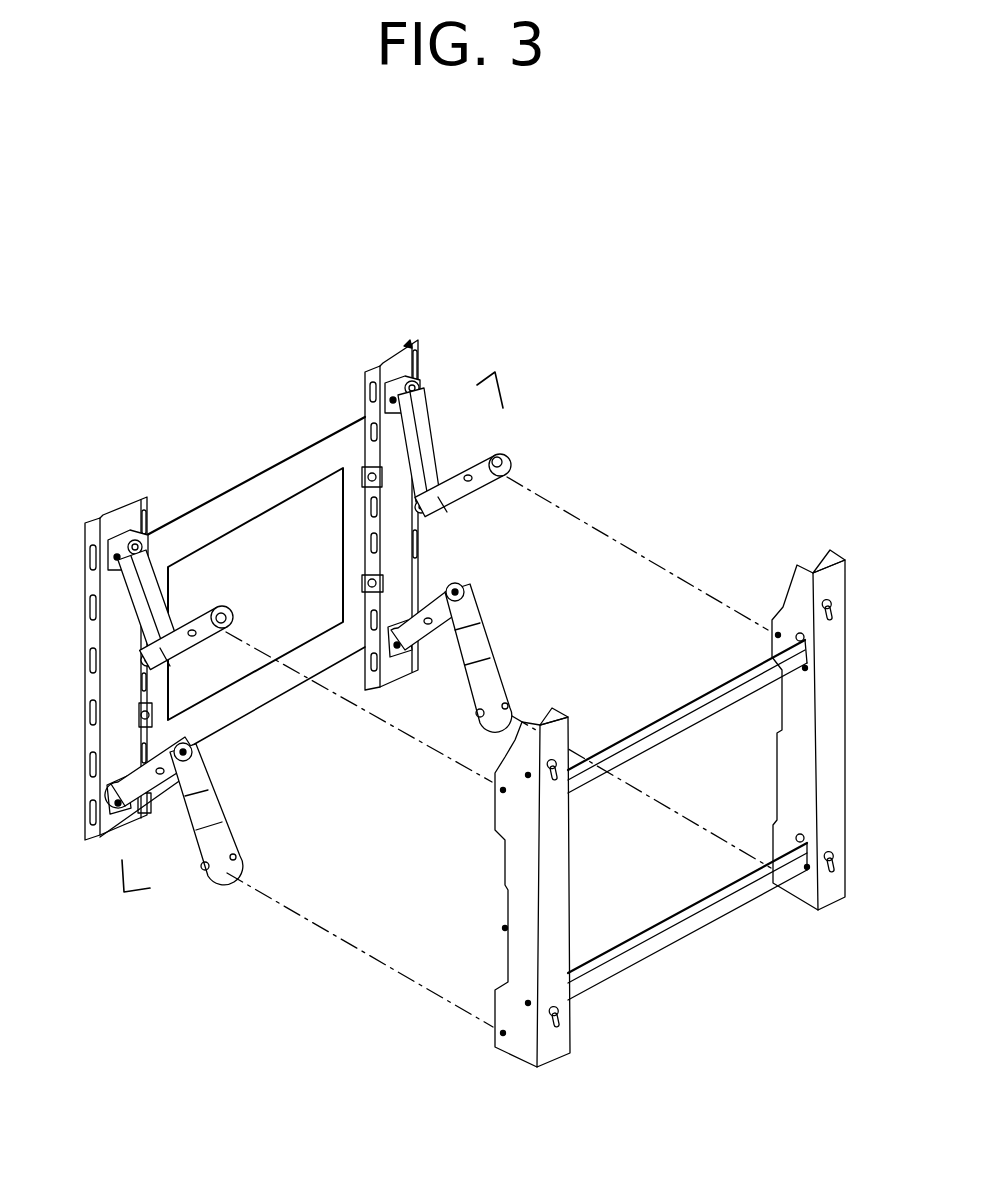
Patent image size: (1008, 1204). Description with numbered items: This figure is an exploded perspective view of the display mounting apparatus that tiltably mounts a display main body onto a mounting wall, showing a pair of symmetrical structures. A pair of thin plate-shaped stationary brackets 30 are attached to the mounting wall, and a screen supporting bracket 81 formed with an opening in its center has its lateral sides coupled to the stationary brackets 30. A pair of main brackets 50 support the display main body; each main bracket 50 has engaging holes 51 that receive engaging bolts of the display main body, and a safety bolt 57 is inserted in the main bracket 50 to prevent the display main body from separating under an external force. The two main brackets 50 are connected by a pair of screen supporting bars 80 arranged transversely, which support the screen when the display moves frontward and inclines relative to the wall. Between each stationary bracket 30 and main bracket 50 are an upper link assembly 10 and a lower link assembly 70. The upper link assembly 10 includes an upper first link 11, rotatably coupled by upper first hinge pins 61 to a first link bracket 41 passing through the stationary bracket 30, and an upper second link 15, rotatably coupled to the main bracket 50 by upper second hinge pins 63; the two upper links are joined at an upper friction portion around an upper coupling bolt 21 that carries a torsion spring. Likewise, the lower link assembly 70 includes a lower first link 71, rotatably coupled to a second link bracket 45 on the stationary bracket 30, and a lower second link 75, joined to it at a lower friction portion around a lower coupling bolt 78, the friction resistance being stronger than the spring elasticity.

The upper link assembly 10 is at (495, 372).
The upper first link 11 is at (130, 612).
The upper second link 15 is at (140, 652).
The upper coupling bolt 21 is at (140, 668).
The stationary bracket 30 is at (122, 515).
The first link bracket 41 is at (408, 343).
The second link bracket 45 is at (112, 800).
The main bracket 50 is at (835, 710).
The engaging hole 51 is at (840, 618).
The safety bolt 57 is at (526, 777).
The upper first hinge pin 61 is at (148, 535).
The upper second hinge pin 63 is at (234, 612).
The lower link assembly 70 is at (124, 895).
The lower first link 71 is at (142, 812).
The lower second link 75 is at (192, 842).
The lower coupling bolt 78 is at (196, 762).
The screen supporting bar 80 is at (674, 733).
The screen supporting bracket 81 is at (292, 476).